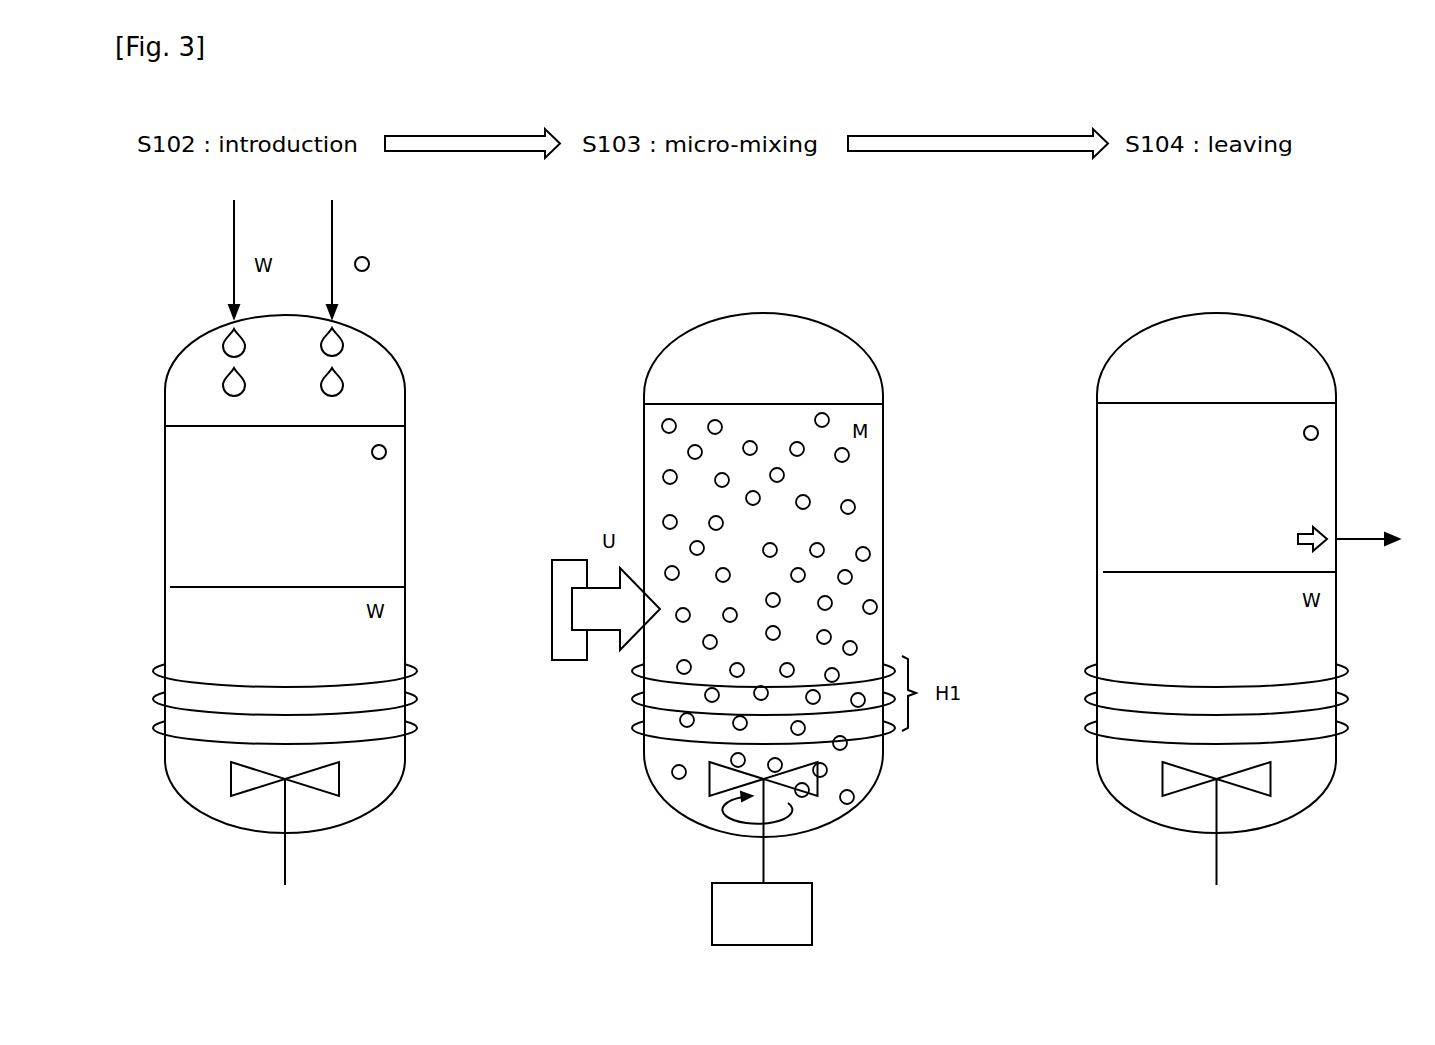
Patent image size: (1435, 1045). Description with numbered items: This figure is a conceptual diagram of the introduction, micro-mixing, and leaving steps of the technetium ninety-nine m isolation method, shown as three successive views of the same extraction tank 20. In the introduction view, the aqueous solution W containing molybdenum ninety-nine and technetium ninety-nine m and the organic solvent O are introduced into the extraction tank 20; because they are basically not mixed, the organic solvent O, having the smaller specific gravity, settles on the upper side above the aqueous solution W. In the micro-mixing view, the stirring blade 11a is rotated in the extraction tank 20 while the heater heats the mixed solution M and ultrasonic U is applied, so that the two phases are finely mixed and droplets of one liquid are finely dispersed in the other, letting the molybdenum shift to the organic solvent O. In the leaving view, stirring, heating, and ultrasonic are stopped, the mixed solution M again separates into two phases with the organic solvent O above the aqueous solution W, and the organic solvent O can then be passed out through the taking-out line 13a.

The extraction tank 20 is at (390, 353).
The stirring blade 11a is at (712, 785).
The taking-out line 13a is at (1357, 537).